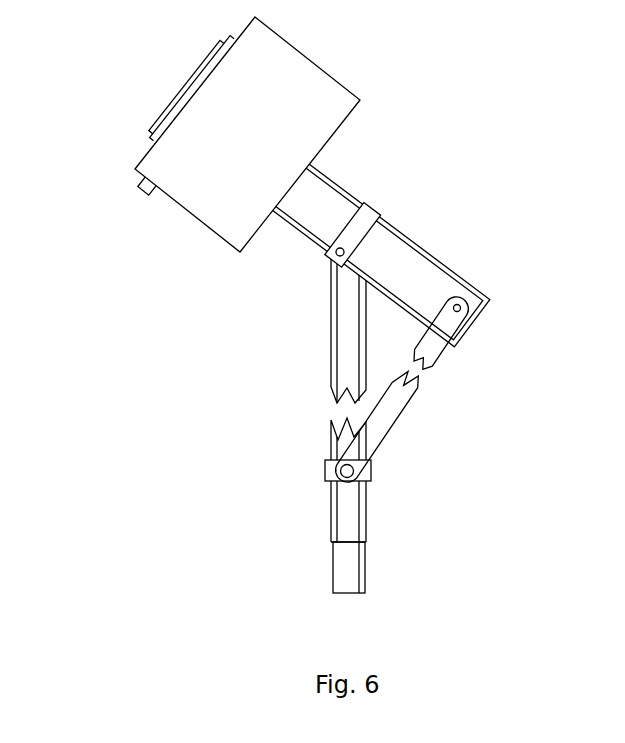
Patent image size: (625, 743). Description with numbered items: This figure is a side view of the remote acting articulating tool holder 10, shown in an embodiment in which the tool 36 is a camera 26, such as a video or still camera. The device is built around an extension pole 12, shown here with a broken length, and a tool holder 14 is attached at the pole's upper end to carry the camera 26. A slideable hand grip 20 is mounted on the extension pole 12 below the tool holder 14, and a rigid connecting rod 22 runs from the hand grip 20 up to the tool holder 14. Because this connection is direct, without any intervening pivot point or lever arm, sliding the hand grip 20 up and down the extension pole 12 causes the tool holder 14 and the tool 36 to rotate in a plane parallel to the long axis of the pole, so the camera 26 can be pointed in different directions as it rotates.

The remote acting articulating tool holder 10 is at (201, 326).
The extension pole 12 is at (347, 332).
The tool holder 14 is at (372, 215).
The slideable hand grip 20 is at (350, 501).
The rigid connecting rod 22 is at (433, 345).
The camera 26 is at (203, 203).
The tool 36 is at (263, 47).